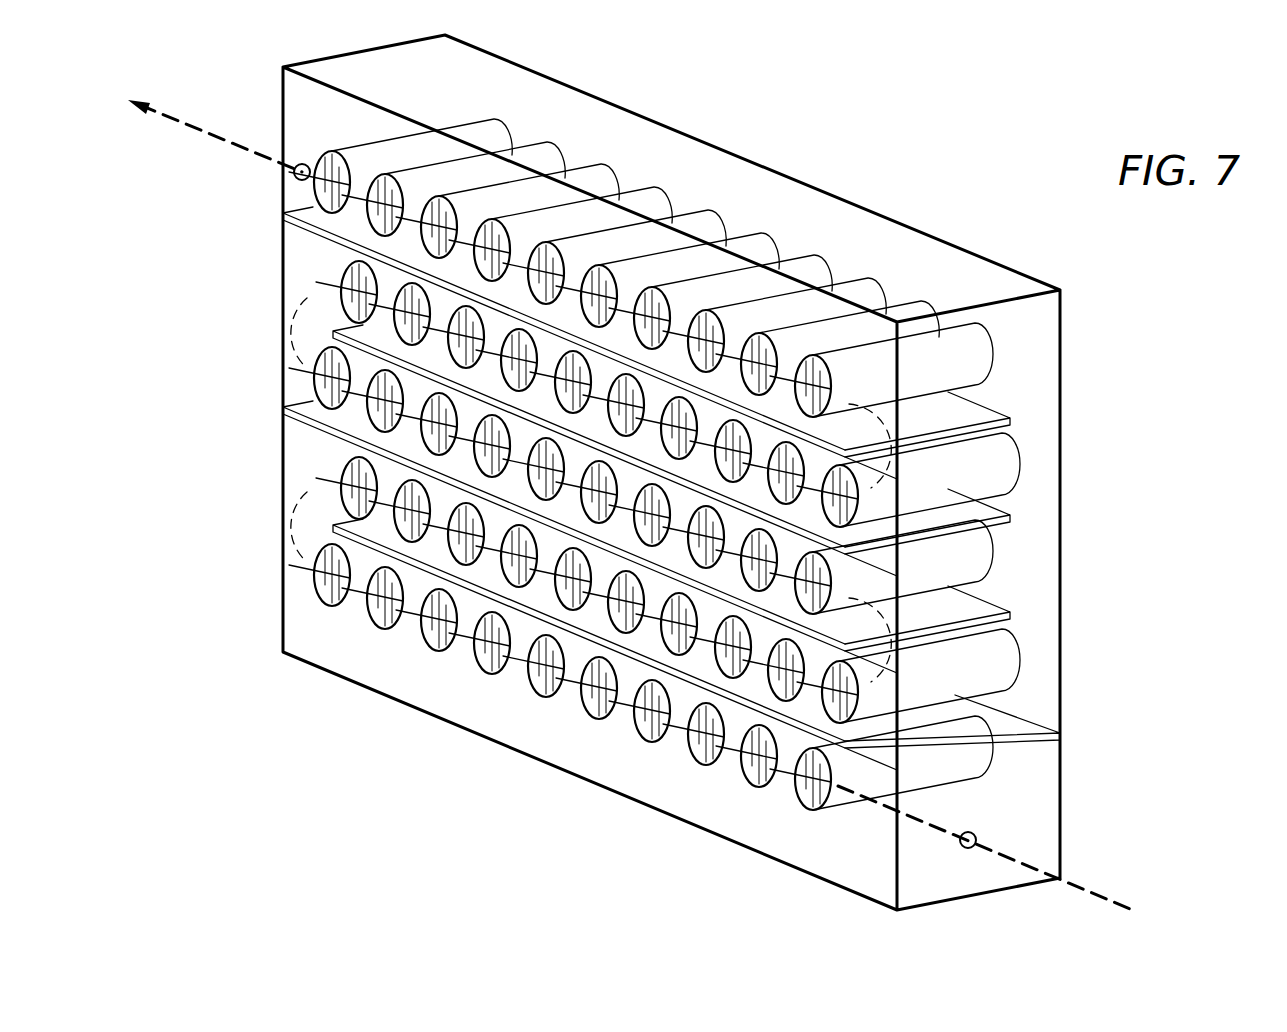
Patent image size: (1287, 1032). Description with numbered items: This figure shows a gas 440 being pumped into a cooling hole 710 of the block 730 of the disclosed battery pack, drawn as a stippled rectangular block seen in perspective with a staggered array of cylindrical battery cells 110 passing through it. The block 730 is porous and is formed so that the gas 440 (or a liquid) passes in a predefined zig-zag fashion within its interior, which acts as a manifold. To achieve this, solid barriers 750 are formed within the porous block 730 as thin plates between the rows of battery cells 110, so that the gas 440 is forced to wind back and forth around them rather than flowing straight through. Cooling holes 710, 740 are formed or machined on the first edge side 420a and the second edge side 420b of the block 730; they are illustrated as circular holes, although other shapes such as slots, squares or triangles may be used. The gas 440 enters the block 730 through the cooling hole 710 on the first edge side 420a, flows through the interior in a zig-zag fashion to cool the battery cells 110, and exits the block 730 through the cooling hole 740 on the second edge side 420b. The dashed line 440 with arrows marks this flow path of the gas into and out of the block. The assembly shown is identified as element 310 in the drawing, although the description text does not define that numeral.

The battery cells 110 is at (383, 210).
The fuel assembly block 310 is at (599, 472).
The first edge side 420a is at (1045, 442).
The second edge side 420b is at (283, 384).
The gas 440 is at (246, 148).
The cooling hole 710 is at (977, 835).
The block 730 is at (315, 629).
The cooling hole 740 is at (293, 175).
The solid barriers 750 is at (332, 434).